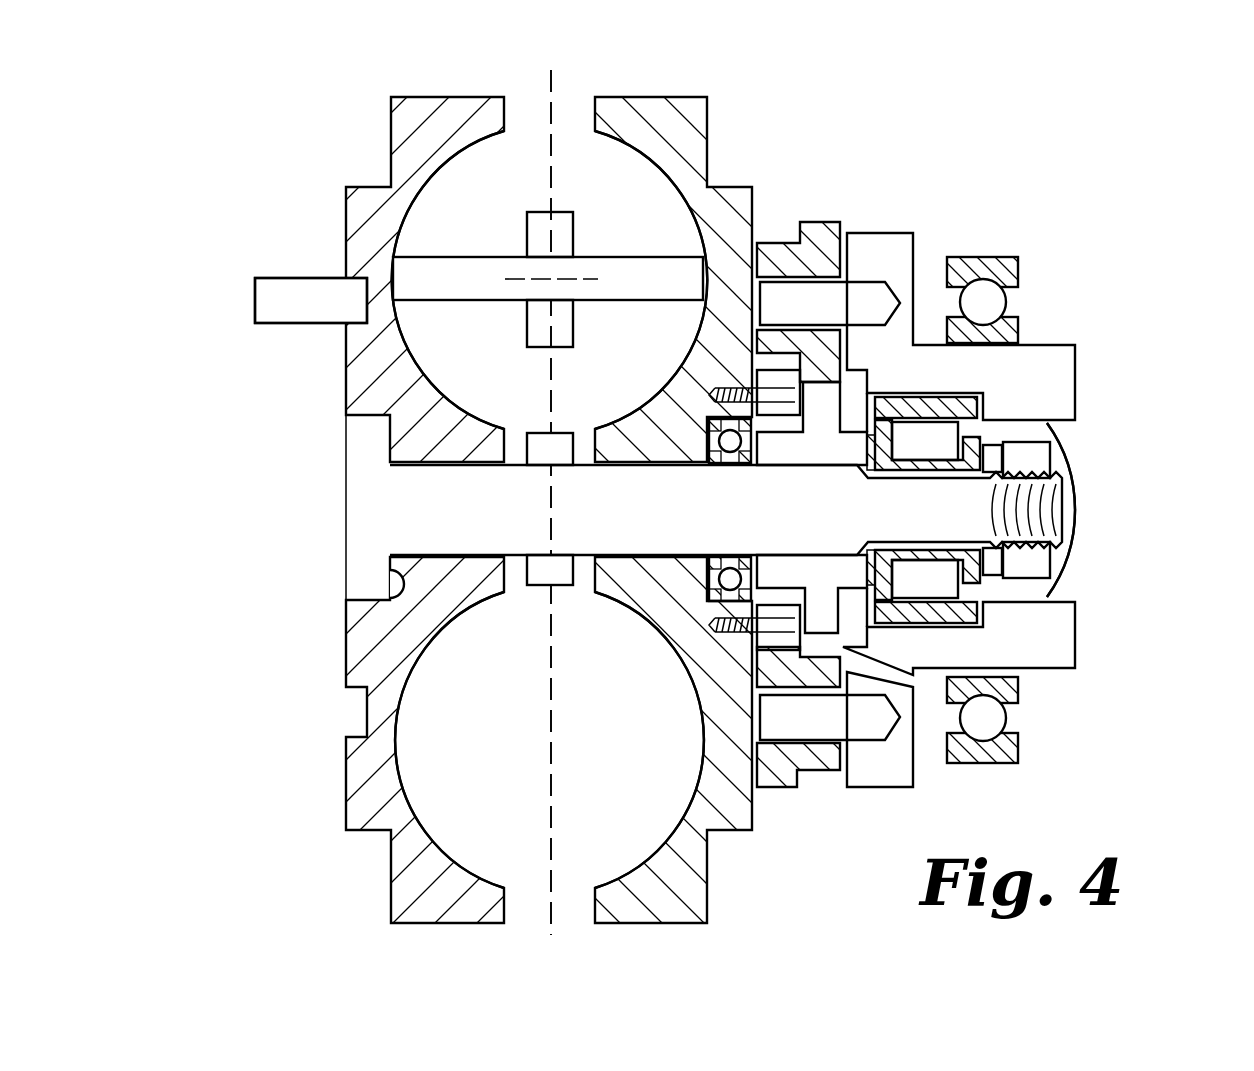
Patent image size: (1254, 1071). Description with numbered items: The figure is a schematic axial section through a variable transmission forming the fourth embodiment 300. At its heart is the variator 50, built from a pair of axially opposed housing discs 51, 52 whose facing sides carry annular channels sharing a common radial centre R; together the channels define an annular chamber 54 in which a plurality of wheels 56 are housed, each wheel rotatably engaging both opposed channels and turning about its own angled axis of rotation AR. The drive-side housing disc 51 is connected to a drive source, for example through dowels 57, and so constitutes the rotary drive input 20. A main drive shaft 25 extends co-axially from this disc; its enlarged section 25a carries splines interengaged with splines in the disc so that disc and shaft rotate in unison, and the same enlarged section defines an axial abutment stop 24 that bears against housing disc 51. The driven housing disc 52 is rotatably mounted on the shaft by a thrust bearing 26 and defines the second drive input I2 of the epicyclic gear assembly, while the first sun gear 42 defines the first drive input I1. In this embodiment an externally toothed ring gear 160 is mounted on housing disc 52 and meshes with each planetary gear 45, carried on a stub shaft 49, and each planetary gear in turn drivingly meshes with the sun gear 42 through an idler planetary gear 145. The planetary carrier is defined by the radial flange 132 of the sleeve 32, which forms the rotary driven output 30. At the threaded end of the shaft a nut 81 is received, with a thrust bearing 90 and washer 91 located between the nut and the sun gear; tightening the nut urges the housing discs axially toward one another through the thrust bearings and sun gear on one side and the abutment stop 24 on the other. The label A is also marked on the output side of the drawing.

The rotary drive input 20 is at (320, 411).
The axial abutment stop 24 is at (383, 600).
The main drive shaft 25 is at (375, 508).
The enlarged section 25a is at (360, 571).
The thrust bearing 26 is at (702, 598).
The rotary driven output 30 is at (1088, 355).
The sleeve 32 is at (1035, 350).
The first sun gear 42 is at (830, 613).
The planetary gear 45 is at (792, 788).
The stub shaft 49 is at (795, 321).
The variator 50 is at (305, 163).
The housing disc 51 is at (346, 210).
The housing disc 52 is at (700, 132).
The annular chamber 54 is at (452, 350).
The wheel 56 is at (468, 270).
The dowel 57 is at (290, 318).
The threaded nut 81 is at (1035, 553).
The thrust bearing 90 is at (975, 590).
The washer 91 is at (990, 568).
The radial flange 132 is at (905, 253).
The idler planetary gear 145 is at (830, 222).
The externally toothed ring gear 160 is at (756, 376).
The embodiment 300 is at (232, 297).
The axial direction A is at (1105, 512).
The axis of rotation AR is at (553, 134).
The common radial centre R is at (546, 284).
The first drive input I1 is at (832, 468).
The second drive input I2 is at (727, 795).